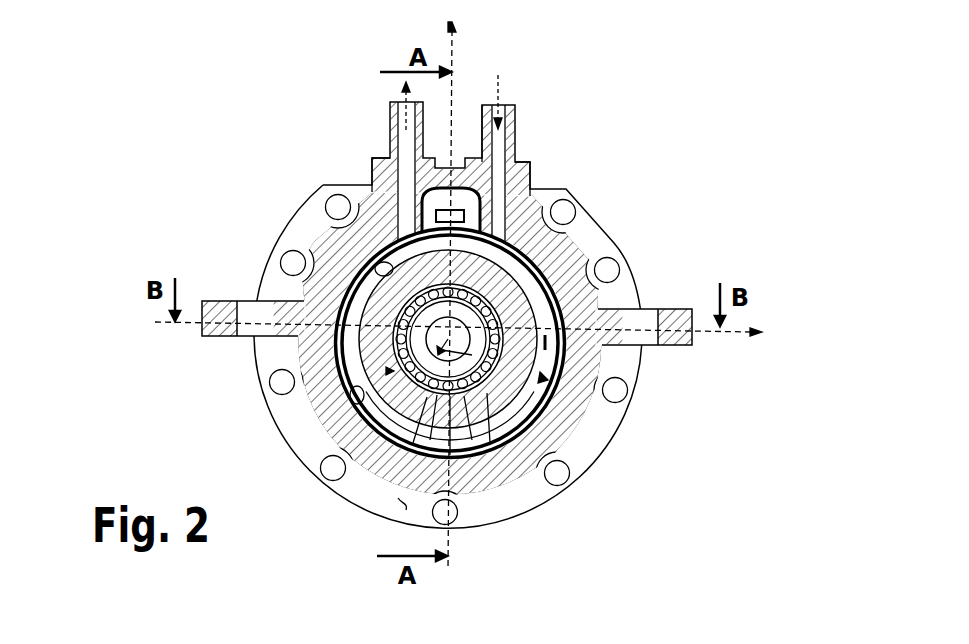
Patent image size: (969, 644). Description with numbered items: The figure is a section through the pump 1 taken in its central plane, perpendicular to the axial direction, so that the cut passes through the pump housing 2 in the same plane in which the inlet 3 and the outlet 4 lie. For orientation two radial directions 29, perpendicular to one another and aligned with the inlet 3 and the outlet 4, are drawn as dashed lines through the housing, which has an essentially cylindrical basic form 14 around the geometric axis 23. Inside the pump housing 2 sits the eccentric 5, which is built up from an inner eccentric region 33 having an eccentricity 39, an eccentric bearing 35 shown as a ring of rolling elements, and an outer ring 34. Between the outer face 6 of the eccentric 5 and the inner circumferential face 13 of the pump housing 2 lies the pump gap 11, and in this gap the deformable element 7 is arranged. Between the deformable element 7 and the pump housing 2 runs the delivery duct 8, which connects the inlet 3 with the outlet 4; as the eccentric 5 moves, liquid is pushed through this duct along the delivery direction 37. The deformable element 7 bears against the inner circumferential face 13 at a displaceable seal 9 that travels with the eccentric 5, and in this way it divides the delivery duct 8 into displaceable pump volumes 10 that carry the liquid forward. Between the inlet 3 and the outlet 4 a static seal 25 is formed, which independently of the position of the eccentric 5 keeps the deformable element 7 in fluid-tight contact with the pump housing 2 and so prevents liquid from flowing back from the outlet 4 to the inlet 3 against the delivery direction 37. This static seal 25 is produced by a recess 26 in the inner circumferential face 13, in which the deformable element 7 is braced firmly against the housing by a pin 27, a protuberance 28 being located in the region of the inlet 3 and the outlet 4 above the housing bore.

The pump 1 is at (226, 99).
The pump housing 2 is at (592, 422).
The inlet 3 is at (515, 84).
The outlet 4 is at (390, 98).
The eccentric 5 is at (550, 448).
The outer face 6 is at (388, 371).
The deformable element 7 is at (375, 268).
The delivery duct 8 is at (375, 487).
The displaceable seal 9 is at (405, 505).
The pump volume 10 is at (407, 450).
The pump gap 11 is at (383, 426).
The inner circumferential face 13 is at (395, 420).
The cylindrical basic form 14 is at (618, 243).
The geometric axis 23 is at (492, 237).
The static seal 25 is at (462, 150).
The recess 26 is at (375, 162).
The pin 27 is at (517, 195).
The protuberance 28 is at (438, 187).
The radial direction 29 is at (458, 101).
The inner eccentric region 33 is at (523, 473).
The outer ring 34 is at (512, 478).
The eccentric bearing 35 is at (477, 493).
The delivery direction 37 is at (392, 97).
The eccentricity 39 is at (573, 397).